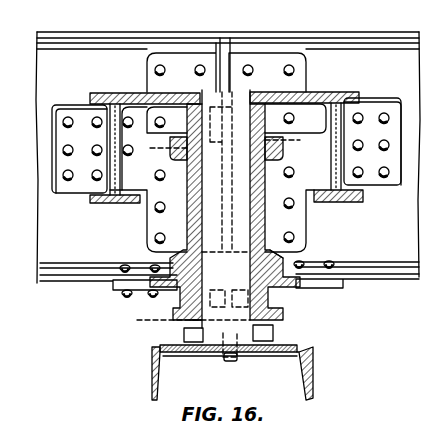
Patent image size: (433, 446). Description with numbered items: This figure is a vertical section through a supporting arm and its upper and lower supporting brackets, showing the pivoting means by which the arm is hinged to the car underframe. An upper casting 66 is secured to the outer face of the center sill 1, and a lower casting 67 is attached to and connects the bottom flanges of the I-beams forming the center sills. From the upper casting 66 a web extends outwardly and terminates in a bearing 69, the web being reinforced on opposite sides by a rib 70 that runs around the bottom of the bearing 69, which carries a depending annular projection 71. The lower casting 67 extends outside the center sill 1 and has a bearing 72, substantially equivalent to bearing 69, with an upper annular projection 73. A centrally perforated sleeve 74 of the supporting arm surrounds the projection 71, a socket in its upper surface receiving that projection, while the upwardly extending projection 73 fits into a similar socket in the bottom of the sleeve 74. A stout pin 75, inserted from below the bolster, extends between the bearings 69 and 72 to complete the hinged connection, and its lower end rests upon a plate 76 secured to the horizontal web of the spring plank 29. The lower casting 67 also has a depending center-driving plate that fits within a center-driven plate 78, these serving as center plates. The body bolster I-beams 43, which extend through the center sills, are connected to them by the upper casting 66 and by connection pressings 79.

The center sill 1 is at (103, 56).
The spring plank 29 is at (313, 367).
The body bolster I-beam 43 is at (108, 104).
The upper casting 66 is at (180, 210).
The lower casting 67 is at (183, 302).
The bearing 69 is at (269, 125).
The rib 70 is at (277, 153).
The depending annular projection 71 is at (176, 155).
The bearing 72 is at (276, 300).
The upper annular projection 73 is at (285, 256).
The centrally perforated sleeve 74 is at (268, 220).
The pin 75 is at (237, 110).
The plate 76 is at (190, 342).
The center-driven plate 78 is at (270, 333).
The connection pressing 79 is at (68, 104).